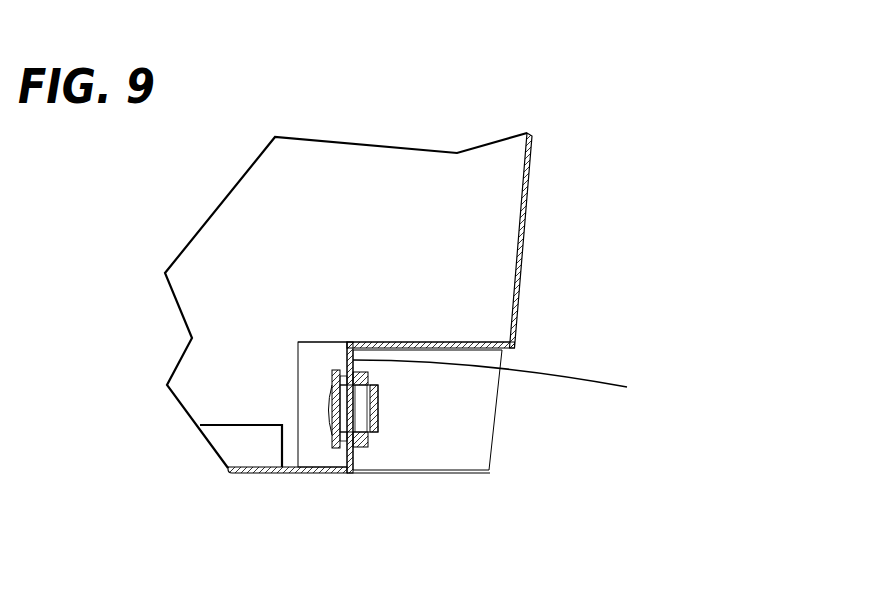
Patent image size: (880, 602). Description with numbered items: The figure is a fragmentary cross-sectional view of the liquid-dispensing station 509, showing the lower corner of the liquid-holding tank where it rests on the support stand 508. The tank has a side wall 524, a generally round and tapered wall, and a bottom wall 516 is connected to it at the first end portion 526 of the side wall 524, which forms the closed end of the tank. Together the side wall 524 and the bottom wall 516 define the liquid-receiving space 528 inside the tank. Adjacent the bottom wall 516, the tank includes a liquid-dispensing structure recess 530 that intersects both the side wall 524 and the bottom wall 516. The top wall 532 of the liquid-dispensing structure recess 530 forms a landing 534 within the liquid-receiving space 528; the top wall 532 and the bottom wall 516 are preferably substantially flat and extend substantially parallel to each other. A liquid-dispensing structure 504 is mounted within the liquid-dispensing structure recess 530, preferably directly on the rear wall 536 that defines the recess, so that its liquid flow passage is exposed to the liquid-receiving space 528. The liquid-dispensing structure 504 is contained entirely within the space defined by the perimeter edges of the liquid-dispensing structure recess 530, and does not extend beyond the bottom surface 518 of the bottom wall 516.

The liquid-dispensing structure 504 is at (378, 433).
The support stand 508 is at (531, 166).
The mounting assembly 509 is at (592, 115).
The bottom wall 516 is at (260, 473).
The bottom surface 518 is at (333, 473).
The side wall 524 is at (517, 290).
The first end portion 526 is at (513, 338).
The liquid-receiving space 528 is at (426, 196).
The liquid-dispensing structure recess 530 is at (460, 413).
The top wall 532 is at (383, 342).
The landing 534 is at (472, 342).
The rear wall 536 is at (515, 384).